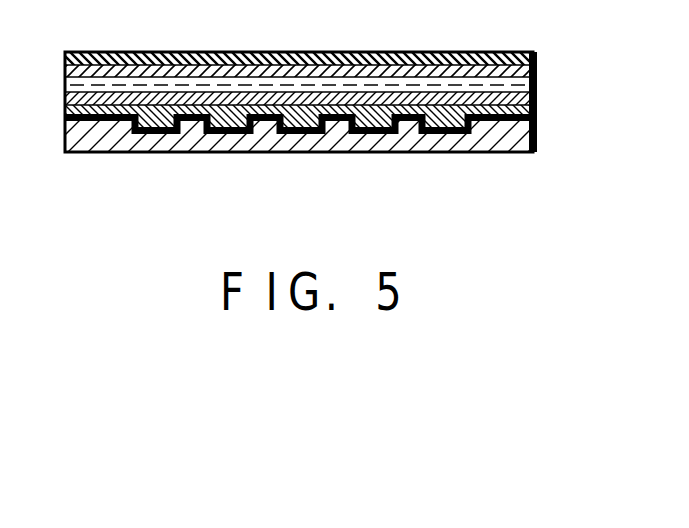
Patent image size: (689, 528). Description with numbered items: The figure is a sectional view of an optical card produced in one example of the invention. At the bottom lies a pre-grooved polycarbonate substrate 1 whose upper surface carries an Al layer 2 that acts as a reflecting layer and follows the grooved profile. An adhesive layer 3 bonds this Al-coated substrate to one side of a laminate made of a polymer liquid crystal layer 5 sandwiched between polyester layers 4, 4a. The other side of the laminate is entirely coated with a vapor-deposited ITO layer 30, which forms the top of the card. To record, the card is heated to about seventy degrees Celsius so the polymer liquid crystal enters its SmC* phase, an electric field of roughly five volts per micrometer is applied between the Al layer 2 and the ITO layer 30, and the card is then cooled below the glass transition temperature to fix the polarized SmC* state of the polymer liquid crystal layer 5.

The polycarbonate substrate 1 is at (510, 152).
The Al layer 2 is at (537, 133).
The adhesive layer 3 is at (537, 113).
The polyester layer 4 is at (537, 100).
The polyester layer 4a is at (537, 72).
The polymer liquid crystal layer 5 is at (537, 84).
The ITO layer 30 is at (537, 58).